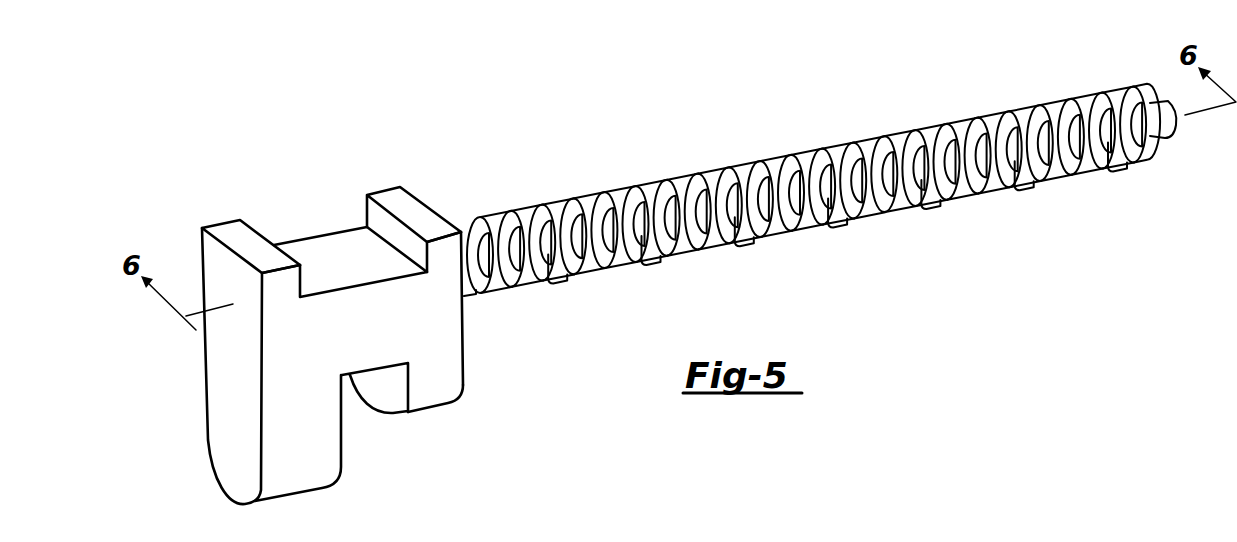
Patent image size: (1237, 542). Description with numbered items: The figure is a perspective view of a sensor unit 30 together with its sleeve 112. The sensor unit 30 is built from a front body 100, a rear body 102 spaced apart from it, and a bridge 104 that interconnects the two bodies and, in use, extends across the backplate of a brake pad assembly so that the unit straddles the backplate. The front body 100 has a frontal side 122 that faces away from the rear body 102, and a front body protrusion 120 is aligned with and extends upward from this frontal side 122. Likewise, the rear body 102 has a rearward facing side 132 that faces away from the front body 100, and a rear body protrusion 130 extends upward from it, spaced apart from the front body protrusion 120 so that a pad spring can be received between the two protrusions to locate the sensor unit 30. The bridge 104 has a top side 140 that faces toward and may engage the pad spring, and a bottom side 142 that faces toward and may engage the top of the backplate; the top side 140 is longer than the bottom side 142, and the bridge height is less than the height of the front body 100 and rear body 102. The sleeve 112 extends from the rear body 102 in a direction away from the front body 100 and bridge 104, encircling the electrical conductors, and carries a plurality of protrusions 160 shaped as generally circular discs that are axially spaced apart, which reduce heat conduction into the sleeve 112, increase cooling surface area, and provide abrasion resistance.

The sensor unit 30 is at (211, 213).
The front body 100 is at (310, 492).
The rear body 102 is at (427, 412).
The bridge 104 is at (378, 346).
The sleeve 112 is at (1173, 140).
The front body protrusion 120 is at (247, 235).
The frontal side 122 is at (238, 378).
The rear body protrusion 130 is at (408, 206).
The rearward facing side 132 is at (468, 357).
The top side 140 is at (344, 272).
The bottom side 142 is at (347, 378).
The protrusions 160 is at (847, 145).